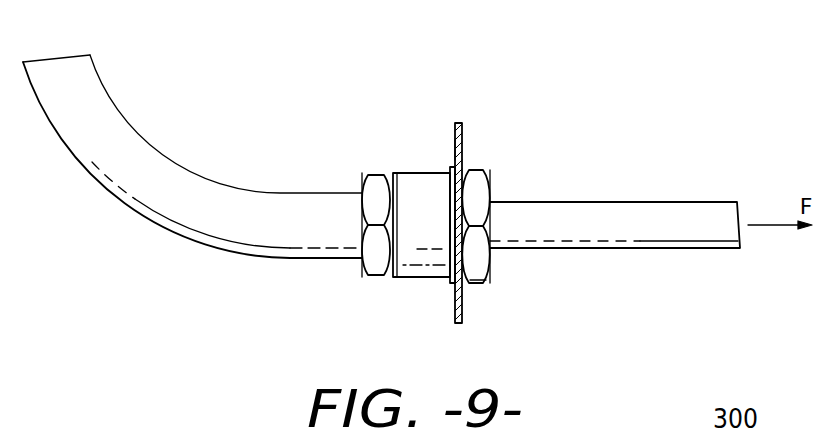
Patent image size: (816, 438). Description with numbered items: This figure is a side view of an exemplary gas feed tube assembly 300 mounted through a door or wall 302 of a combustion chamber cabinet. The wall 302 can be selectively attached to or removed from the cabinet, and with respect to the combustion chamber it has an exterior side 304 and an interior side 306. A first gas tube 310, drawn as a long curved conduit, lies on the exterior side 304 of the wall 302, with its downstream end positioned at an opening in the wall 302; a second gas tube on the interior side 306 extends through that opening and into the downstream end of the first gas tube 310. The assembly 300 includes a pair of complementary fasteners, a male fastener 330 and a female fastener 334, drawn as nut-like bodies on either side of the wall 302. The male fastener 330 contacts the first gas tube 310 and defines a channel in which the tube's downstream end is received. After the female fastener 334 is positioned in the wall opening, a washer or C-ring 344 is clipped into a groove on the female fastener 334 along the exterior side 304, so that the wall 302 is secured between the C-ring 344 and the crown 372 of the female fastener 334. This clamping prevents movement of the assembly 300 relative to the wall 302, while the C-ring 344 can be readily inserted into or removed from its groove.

The gas feed tube assembly 300 is at (581, 93).
The wall 302 is at (458, 122).
The exterior side 304 is at (453, 302).
The interior side 306 is at (466, 144).
The first gas tube 310 is at (117, 135).
The male fastener 330 is at (378, 263).
The female fastener 334 is at (481, 190).
The C-ring 344 is at (455, 150).
The crown 372 is at (478, 284).